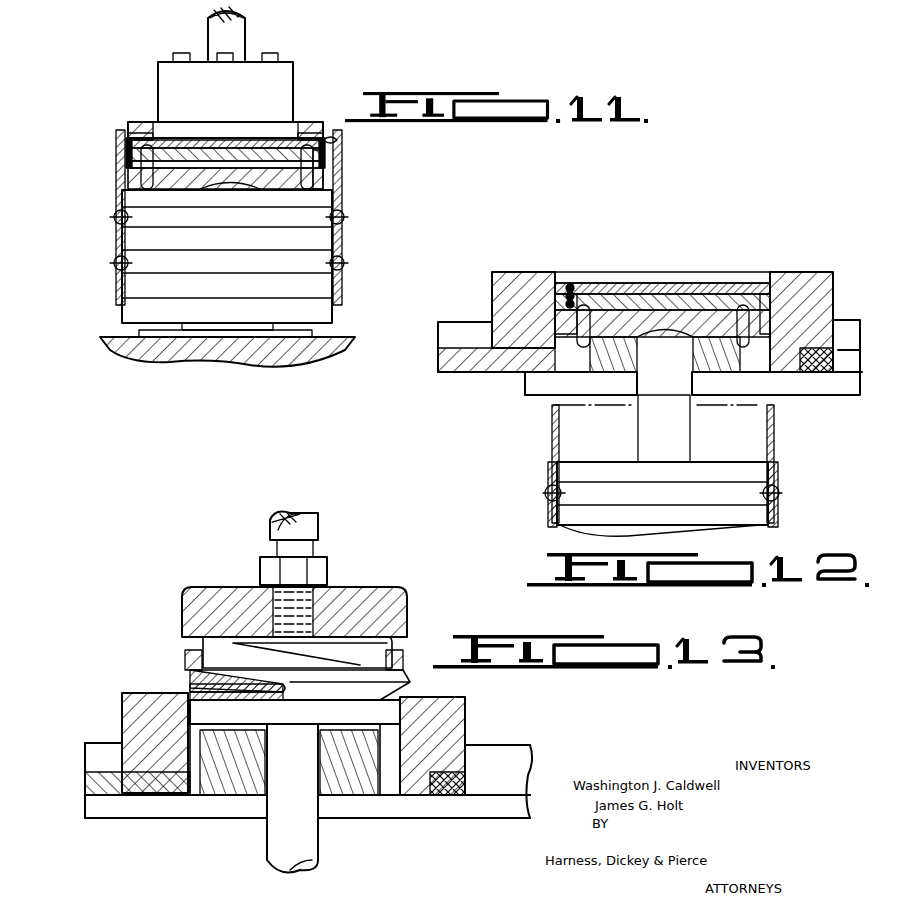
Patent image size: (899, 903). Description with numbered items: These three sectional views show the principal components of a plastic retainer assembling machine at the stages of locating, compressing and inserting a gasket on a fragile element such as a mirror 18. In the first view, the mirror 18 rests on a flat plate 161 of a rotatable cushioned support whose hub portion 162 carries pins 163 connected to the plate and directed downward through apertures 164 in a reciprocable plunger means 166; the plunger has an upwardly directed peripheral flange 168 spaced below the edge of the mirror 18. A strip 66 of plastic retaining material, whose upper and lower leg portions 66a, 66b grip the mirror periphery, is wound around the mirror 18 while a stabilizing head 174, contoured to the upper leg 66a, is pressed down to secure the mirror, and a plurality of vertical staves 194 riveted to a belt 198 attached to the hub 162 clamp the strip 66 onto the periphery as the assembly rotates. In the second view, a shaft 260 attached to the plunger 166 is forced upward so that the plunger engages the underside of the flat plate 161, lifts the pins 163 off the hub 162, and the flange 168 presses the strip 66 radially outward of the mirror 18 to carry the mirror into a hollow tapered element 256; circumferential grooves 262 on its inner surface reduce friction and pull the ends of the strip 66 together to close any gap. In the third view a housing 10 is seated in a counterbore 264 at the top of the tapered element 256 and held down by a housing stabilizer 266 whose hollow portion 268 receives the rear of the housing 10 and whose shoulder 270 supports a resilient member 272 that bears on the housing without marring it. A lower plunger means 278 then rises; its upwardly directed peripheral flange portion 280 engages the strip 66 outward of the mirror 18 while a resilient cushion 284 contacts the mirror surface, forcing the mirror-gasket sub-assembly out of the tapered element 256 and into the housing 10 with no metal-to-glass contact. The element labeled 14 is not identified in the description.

In FIG. 13, the housing 10 is at (406, 687).
In FIG. 13, the frame 14 is at (122, 700).
In FIG. 11, the mirror 18 is at (215, 140).
In FIG. 12, the mirror 18 is at (663, 290).
In FIG. 13, the mirror 18 is at (285, 688).
In FIG. 11, the strip of plastic retaining material 66 is at (345, 145).
In FIG. 12, the strip of plastic retaining material 66 is at (556, 299).
In FIG. 13, the strip of plastic retaining material 66 is at (179, 691).
In FIG. 11, the upper leg portion 66a is at (326, 138).
In FIG. 12, the upper leg portion 66a is at (571, 284).
In FIG. 11, the lower leg portion 66b is at (342, 160).
In FIG. 12, the lower leg portion 66b is at (568, 303).
In FIG. 11, the flat plate 161 is at (175, 148).
In FIG. 12, the flat plate 161 is at (722, 283).
In FIG. 11, the hub portion 162 is at (330, 245).
In FIG. 12, the hub portion 162 is at (572, 508).
In FIG. 11, the pins 163 is at (148, 190).
In FIG. 12, the pins 163 is at (583, 305).
In FIG. 11, the apertures 164 is at (325, 180).
In FIG. 12, the apertures 164 is at (600, 300).
In FIG. 11, the plunger means 166 is at (258, 185).
In FIG. 12, the plunger means 166 is at (620, 337).
In FIG. 11, the peripheral flange 168 is at (120, 152).
In FIG. 12, the peripheral flange 168 is at (780, 300).
In FIG. 11, the stabilizing head 174 is at (302, 70).
In FIG. 11, the vertical staves 194 is at (116, 160).
In FIG. 12, the vertical staves 194 is at (552, 432).
In FIG. 11, the belt 198 is at (112, 245).
In FIG. 12, the belt 198 is at (780, 512).
In FIG. 12, the hollow tapered element 256 is at (486, 298).
In FIG. 13, the hollow tapered element 256 is at (475, 709).
In FIG. 12, the shaft 260 is at (670, 440).
In FIG. 12, the grooves 262 is at (540, 380).
In FIG. 13, the grooves 262 is at (208, 797).
In FIG. 13, the counterbore 264 is at (465, 746).
In FIG. 13, the housing stabilizer 266 is at (399, 580).
In FIG. 13, the hollow portion 268 is at (294, 611).
In FIG. 13, the shoulder 270 is at (400, 650).
In FIG. 13, the resilient member 272 is at (183, 657).
In FIG. 13, the plunger means 278 is at (385, 731).
In FIG. 13, the peripheral flange portion 280 is at (137, 755).
In FIG. 13, the resilient cushion 284 is at (295, 712).